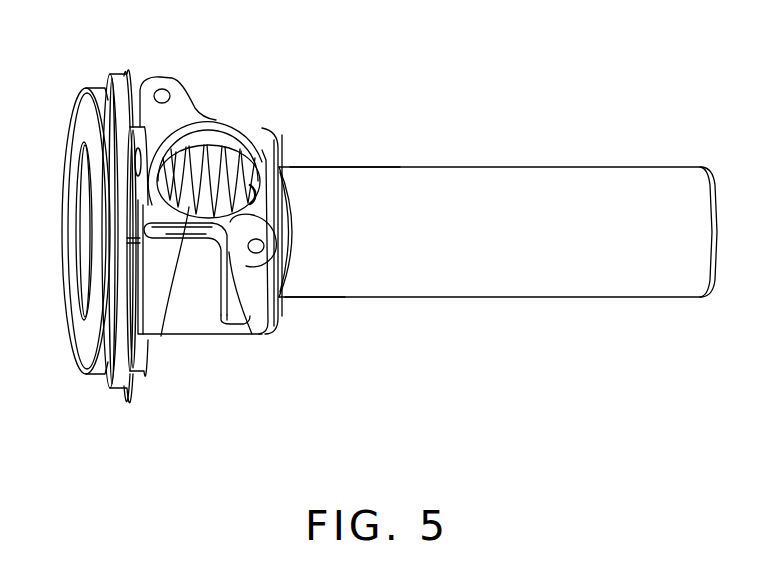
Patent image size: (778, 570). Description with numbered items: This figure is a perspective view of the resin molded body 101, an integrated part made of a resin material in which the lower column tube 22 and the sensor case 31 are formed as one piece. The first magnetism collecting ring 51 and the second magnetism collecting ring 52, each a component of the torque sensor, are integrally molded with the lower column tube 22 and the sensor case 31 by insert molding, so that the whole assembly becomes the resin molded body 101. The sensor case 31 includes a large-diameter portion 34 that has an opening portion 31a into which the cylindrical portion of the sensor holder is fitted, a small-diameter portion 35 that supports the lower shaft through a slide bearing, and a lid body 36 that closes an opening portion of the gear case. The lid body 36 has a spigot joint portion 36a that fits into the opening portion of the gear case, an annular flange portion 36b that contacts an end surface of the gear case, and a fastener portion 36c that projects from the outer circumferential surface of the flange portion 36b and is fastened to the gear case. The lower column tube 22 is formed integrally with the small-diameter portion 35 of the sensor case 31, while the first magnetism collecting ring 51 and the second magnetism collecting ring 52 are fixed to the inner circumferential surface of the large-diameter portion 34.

The resin molded body 101 is at (408, 98).
The lower column tube 22 is at (530, 185).
The sensor case 31 is at (255, 120).
The opening portion 31a is at (206, 140).
The large-diameter portion 34 is at (198, 317).
The small-diameter portion 35 is at (322, 278).
The lid body 36 is at (110, 397).
The spigot joint portion 36a is at (93, 88).
The annular flange portion 36b is at (102, 84).
The fastener portion 36c is at (143, 127).
The first magnetism collecting ring 51 is at (250, 330).
The second magnetism collecting ring 52 is at (161, 336).